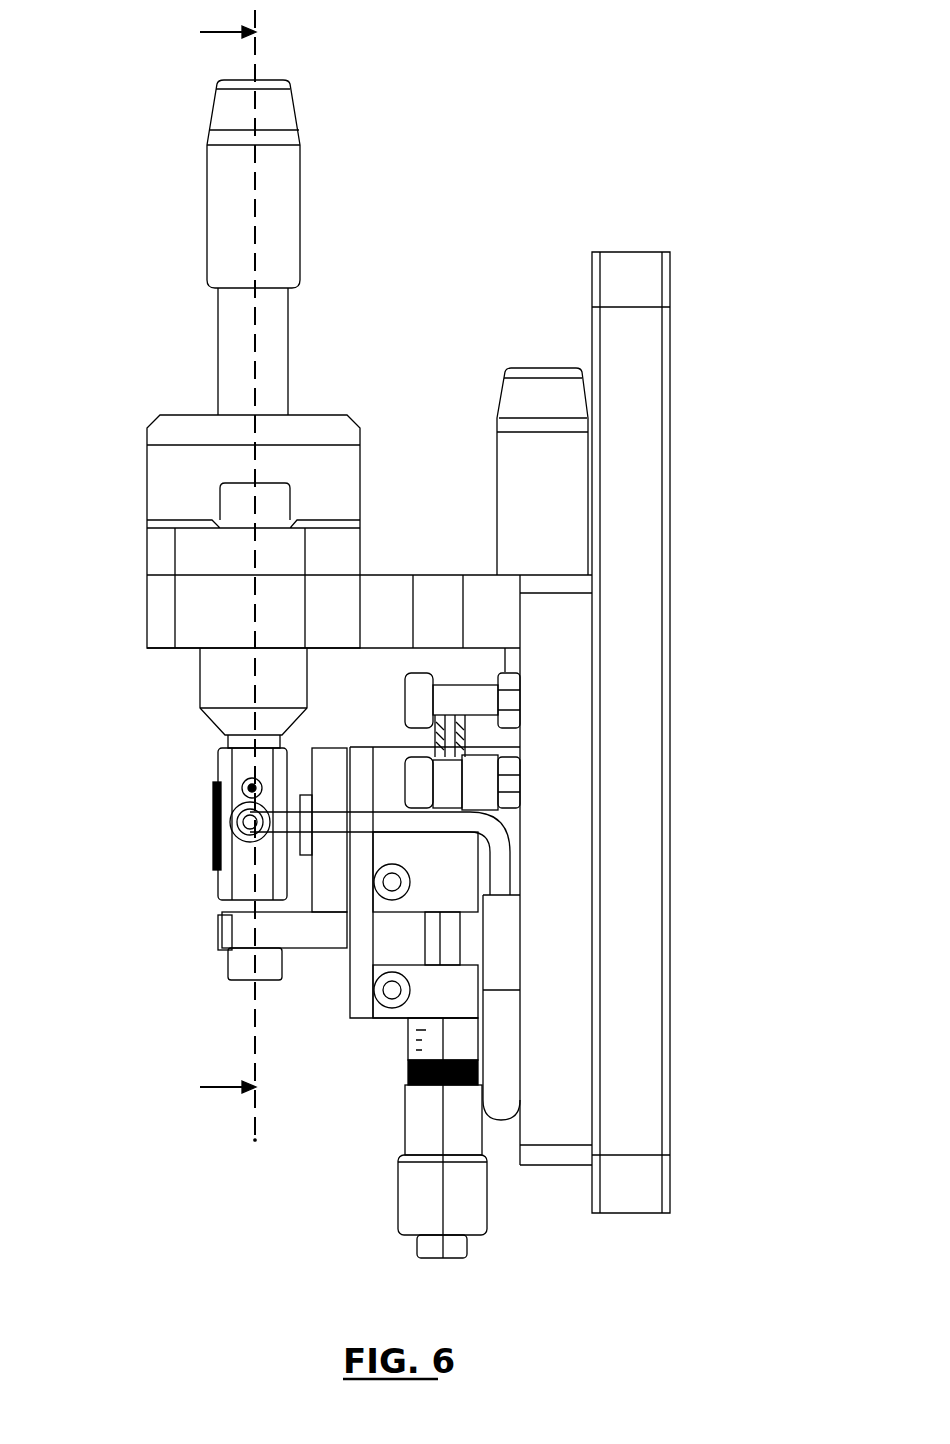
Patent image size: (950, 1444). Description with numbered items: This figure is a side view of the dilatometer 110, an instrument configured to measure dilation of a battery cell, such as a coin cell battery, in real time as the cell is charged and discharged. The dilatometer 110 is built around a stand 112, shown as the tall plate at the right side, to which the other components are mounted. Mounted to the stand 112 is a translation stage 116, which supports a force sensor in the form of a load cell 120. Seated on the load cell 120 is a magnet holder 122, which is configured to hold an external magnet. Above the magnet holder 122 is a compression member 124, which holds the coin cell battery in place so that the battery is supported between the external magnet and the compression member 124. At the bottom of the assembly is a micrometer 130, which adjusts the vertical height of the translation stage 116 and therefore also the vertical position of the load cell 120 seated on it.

The dilatometer 110 is at (113, 42).
The stand 112 is at (640, 435).
The translation stage 116 is at (232, 928).
The load cell 120 is at (255, 873).
The magnet holder 122 is at (218, 690).
The compression member 124 is at (207, 172).
The micrometer 130 is at (465, 1218).